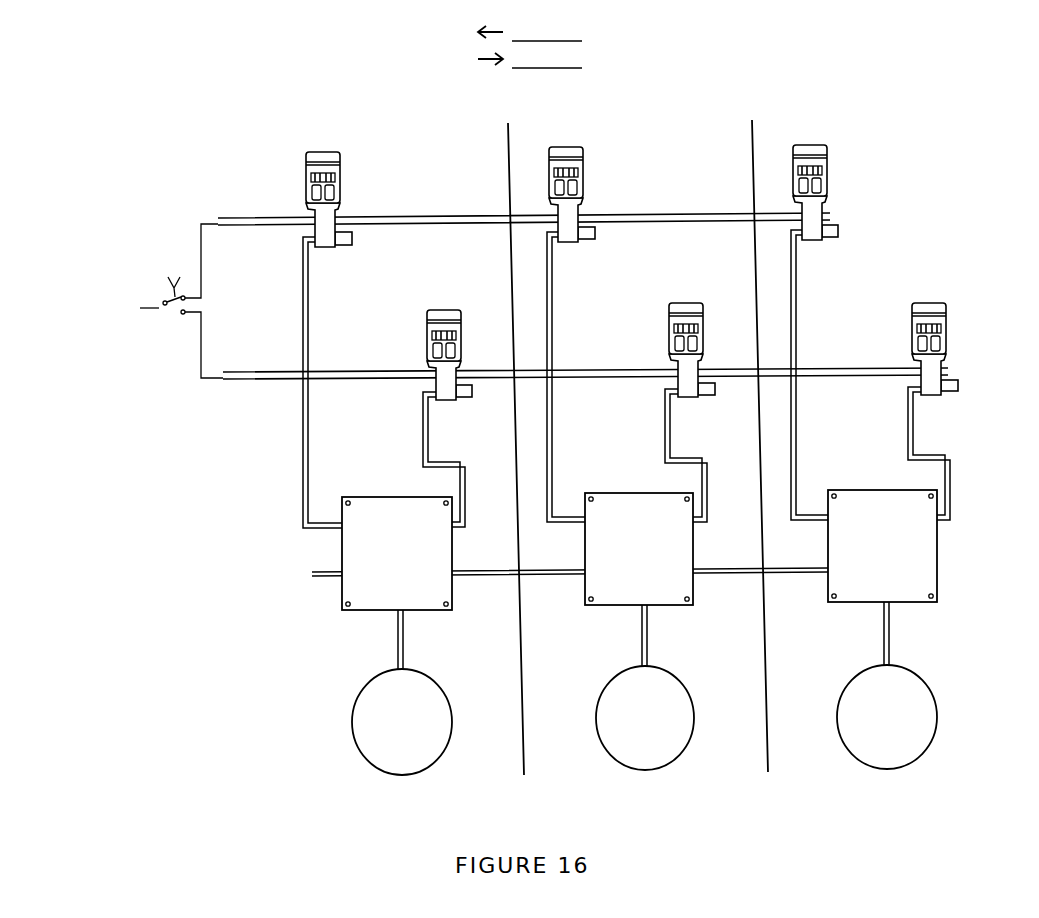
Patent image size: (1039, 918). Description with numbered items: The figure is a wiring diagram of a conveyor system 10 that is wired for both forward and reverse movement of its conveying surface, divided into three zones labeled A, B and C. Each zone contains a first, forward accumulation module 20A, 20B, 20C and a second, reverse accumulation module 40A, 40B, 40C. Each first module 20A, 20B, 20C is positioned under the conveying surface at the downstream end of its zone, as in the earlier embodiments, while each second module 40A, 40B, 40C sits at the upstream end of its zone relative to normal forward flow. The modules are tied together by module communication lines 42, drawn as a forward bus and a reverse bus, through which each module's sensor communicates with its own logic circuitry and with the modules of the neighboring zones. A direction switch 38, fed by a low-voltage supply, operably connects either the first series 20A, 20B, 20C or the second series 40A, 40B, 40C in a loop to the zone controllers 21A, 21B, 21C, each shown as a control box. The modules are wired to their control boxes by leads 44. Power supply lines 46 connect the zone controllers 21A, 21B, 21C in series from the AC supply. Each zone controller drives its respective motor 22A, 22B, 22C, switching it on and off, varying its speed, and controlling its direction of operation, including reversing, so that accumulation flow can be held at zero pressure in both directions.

The conveyor system 10 is at (750, 57).
The forward accumulation module 20A is at (437, 310).
The forward accumulation module 20B is at (683, 302).
The forward accumulation module 20C is at (942, 302).
The zone controller 21A is at (426, 594).
The zone controller 21B is at (662, 591).
The zone controller 21C is at (904, 588).
The motor 22A is at (360, 708).
The motor 22B is at (598, 700).
The motor 22C is at (868, 690).
The direction switch 38 is at (67, 325).
The reverse accumulation module 40A is at (341, 175).
The reverse accumulation module 40B is at (585, 173).
The reverse accumulation module 40C is at (828, 173).
The module communication lines 42 is at (432, 218).
The sensor lead 44 is at (947, 430).
The power supply lines 46 is at (482, 577).